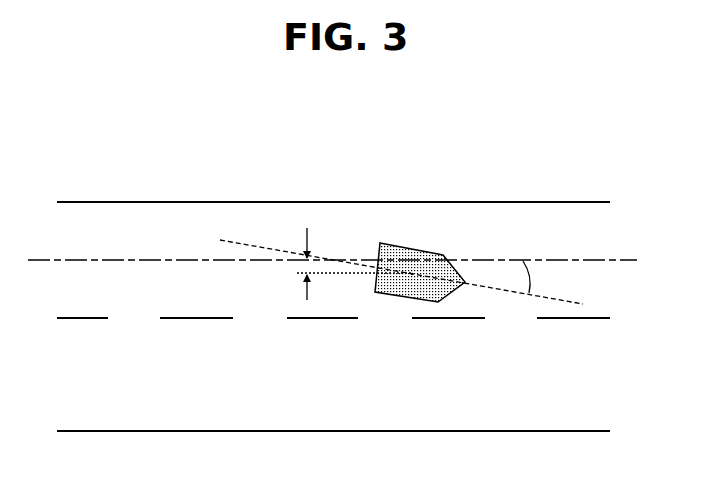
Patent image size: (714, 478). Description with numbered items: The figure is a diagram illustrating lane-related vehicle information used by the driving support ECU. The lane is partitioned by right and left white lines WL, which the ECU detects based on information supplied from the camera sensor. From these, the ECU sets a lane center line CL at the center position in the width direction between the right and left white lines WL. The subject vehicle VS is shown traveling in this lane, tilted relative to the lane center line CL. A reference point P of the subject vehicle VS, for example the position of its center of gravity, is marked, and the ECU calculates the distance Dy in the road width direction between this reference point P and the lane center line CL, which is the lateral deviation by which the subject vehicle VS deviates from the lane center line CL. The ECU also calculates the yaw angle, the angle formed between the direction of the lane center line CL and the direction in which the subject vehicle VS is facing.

The white lines WL is at (349, 320).
The lane center line CL is at (346, 264).
The subject vehicle VS is at (442, 298).
The reference point P is at (412, 270).
The lateral deviation Dy is at (290, 268).